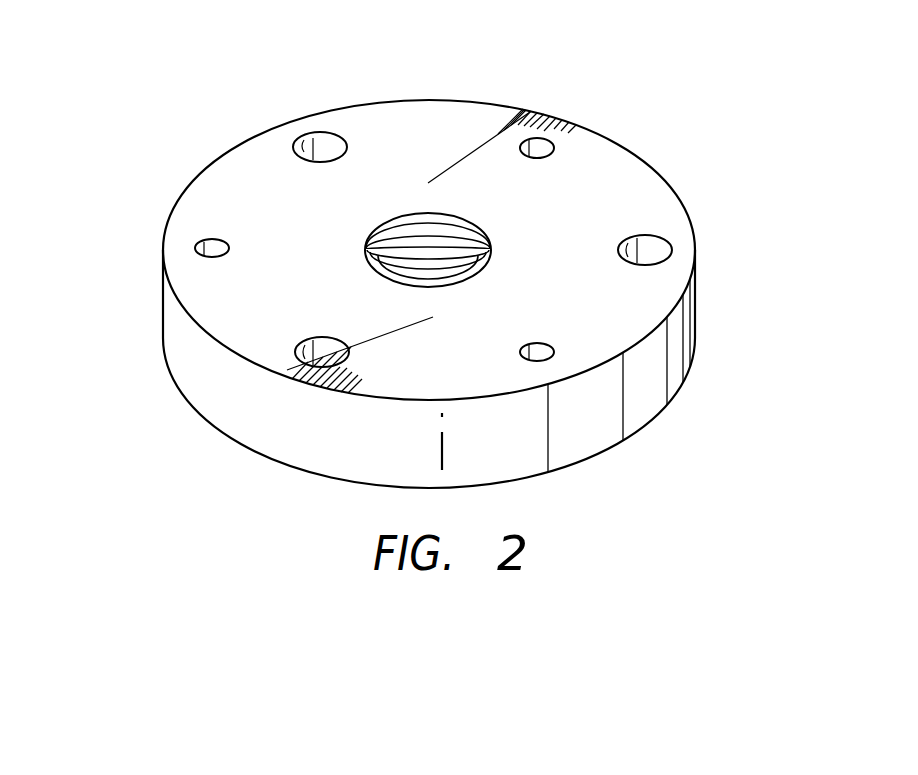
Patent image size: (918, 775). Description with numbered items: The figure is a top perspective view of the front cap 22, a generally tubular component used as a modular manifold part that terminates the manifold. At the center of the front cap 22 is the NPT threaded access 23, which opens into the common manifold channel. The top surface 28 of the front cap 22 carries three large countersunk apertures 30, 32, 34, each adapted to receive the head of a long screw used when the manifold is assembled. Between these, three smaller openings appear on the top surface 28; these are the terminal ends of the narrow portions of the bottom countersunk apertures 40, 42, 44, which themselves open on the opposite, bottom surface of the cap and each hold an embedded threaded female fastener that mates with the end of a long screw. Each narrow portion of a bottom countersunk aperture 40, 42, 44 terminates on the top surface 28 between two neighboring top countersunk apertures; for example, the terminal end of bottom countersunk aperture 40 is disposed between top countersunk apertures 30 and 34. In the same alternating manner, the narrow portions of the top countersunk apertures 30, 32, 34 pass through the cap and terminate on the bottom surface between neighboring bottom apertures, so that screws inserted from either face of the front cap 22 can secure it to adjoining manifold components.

The front cap 22 is at (415, 244).
The NPT threaded access 23 is at (419, 232).
The top surface 28 is at (190, 292).
The countersunk aperture 30 is at (653, 249).
The countersunk aperture 32 is at (325, 143).
The countersunk aperture 34 is at (322, 355).
The countersunk aperture 40 is at (553, 348).
The countersunk aperture 42 is at (540, 146).
The countersunk aperture 44 is at (212, 242).